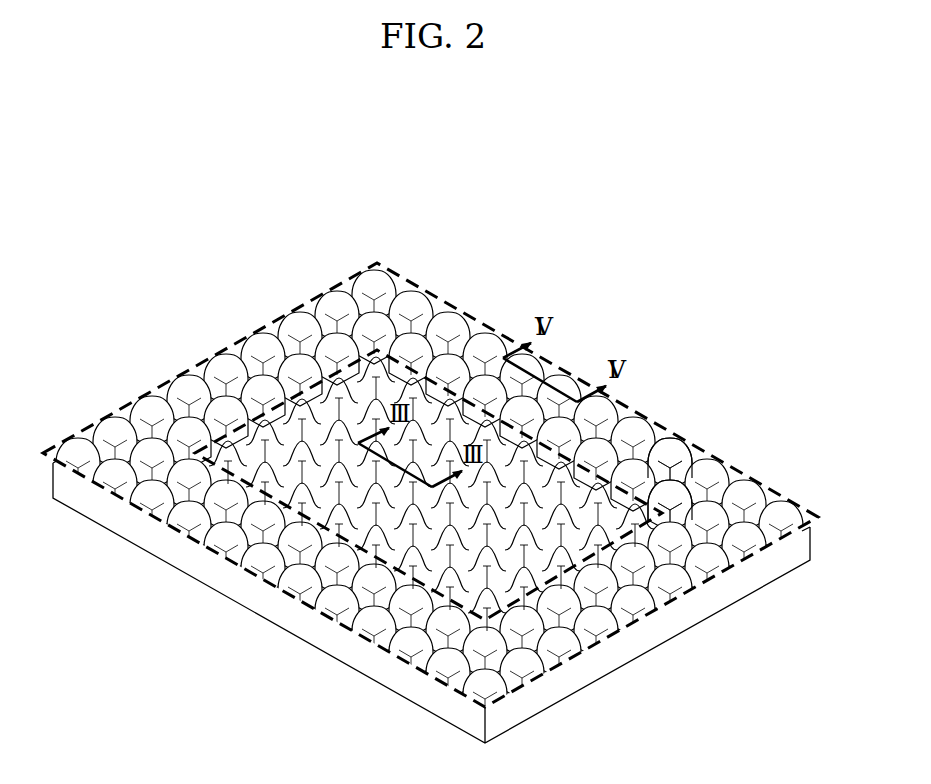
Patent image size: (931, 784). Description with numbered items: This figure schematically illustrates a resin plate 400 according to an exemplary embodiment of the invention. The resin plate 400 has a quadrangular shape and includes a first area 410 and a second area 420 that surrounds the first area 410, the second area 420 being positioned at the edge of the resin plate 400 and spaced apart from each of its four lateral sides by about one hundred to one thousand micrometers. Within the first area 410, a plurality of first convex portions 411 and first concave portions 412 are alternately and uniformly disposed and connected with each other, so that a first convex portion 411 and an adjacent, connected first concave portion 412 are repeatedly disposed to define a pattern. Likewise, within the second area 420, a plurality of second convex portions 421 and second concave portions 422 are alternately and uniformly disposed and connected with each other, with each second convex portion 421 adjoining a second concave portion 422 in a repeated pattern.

The resin plate 400 is at (604, 243).
The first area 410 is at (292, 518).
The first convex portion 411 is at (377, 538).
The first concave portion 412 is at (400, 542).
The second area 420 is at (481, 313).
The second convex portion 421 is at (675, 472).
The second concave portion 422 is at (674, 455).